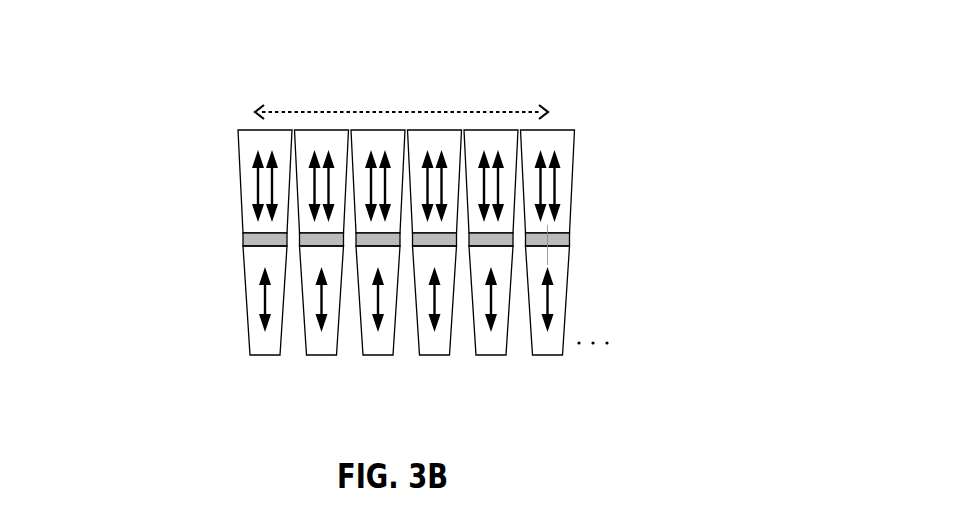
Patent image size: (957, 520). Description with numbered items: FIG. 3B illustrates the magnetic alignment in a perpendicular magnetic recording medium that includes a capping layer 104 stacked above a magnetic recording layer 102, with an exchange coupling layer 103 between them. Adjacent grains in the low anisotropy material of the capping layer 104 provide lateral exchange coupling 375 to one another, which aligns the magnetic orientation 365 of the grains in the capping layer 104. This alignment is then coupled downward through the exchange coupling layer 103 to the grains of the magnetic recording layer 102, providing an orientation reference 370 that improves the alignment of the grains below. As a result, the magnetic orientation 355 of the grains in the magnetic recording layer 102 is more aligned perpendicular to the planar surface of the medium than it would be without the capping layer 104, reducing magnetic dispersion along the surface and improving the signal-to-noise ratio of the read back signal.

The capping layer 104 is at (217, 230).
The exchange coupling layer 103 is at (570, 245).
The magnetic recording layer 102 is at (240, 357).
The magnetic orientation 365 is at (505, 160).
The magnetic orientation 355 is at (497, 323).
The orientation reference 370 is at (568, 237).
The lateral exchange coupling 375 is at (403, 82).